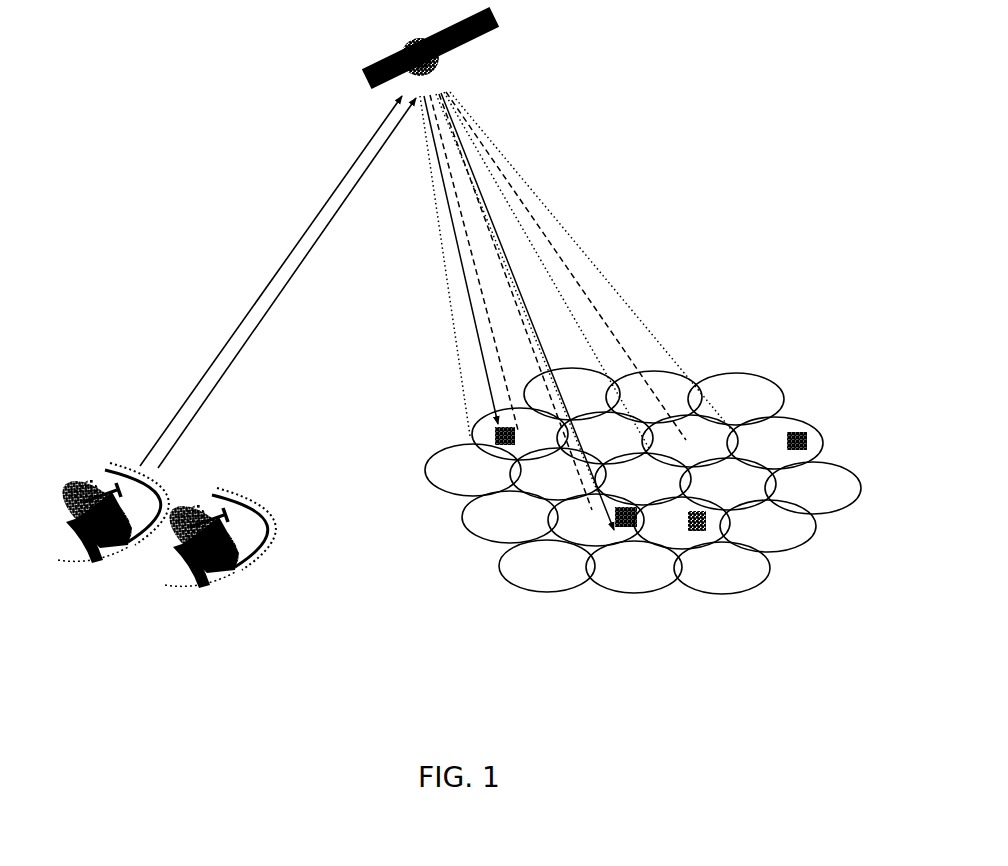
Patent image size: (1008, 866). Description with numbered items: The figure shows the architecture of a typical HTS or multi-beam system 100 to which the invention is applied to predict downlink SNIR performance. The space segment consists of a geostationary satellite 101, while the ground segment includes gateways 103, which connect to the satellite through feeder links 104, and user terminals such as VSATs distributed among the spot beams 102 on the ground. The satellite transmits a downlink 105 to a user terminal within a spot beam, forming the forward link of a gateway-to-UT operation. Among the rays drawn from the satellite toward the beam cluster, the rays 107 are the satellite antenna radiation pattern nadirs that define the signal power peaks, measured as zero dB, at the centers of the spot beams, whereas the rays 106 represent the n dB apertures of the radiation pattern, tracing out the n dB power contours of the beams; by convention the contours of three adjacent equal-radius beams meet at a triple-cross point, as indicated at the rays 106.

The multi-beam system 100 is at (152, 153).
The geostationary satellite 101 is at (357, 76).
The spot beams 102 is at (769, 362).
The gateways 103 is at (174, 480).
The feeder links 104 is at (297, 240).
The downlink 105 is at (508, 263).
The rays representing n dB apertures 106 is at (559, 207).
The rays representing radiation pattern nadirs 107 is at (535, 334).